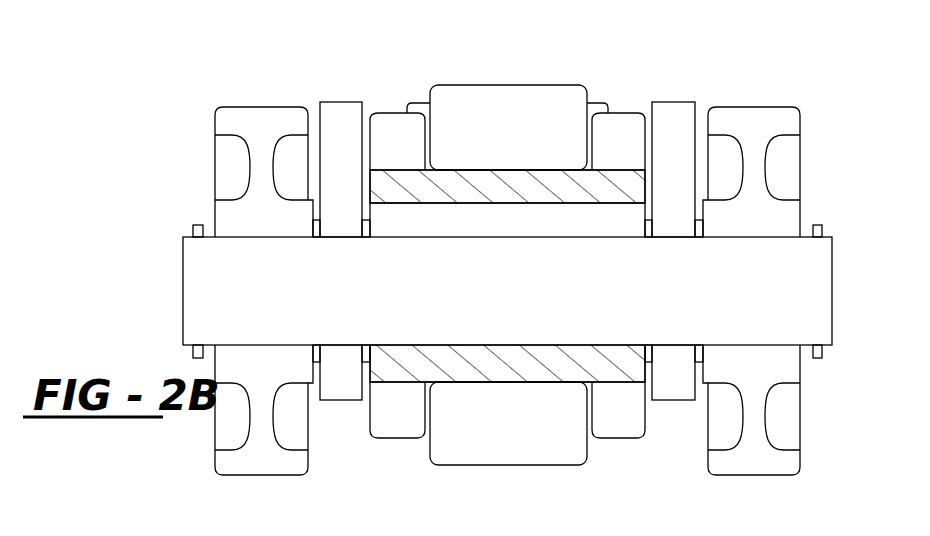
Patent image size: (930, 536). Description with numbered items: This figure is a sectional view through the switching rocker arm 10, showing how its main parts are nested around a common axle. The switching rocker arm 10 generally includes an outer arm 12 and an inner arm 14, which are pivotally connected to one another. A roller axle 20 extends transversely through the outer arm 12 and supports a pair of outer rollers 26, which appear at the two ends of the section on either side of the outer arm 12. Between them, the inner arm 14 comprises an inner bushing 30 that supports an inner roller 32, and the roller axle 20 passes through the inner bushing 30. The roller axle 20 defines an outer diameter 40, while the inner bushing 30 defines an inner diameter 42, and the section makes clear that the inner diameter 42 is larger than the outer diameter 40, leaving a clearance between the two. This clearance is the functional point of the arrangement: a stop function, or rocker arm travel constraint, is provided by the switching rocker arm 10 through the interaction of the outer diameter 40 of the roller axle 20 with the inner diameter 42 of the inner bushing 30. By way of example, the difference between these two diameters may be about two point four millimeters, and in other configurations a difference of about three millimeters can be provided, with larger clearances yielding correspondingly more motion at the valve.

The switching rocker arm 10 is at (108, 156).
The outer arm 12 is at (672, 115).
The inner arm 14 is at (613, 123).
The roller axle 20 is at (207, 290).
The outer rollers 26 is at (263, 117).
The inner bushing 30 is at (610, 370).
The inner roller 32 is at (507, 448).
The outer diameter 40 is at (258, 238).
The inner diameter 42 is at (508, 204).